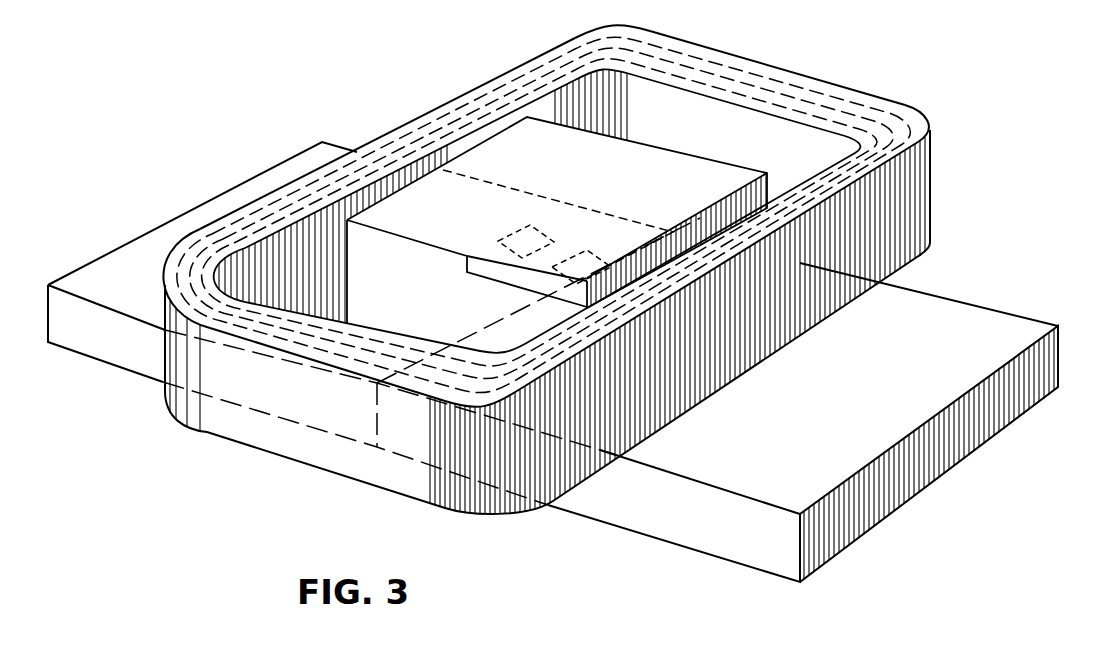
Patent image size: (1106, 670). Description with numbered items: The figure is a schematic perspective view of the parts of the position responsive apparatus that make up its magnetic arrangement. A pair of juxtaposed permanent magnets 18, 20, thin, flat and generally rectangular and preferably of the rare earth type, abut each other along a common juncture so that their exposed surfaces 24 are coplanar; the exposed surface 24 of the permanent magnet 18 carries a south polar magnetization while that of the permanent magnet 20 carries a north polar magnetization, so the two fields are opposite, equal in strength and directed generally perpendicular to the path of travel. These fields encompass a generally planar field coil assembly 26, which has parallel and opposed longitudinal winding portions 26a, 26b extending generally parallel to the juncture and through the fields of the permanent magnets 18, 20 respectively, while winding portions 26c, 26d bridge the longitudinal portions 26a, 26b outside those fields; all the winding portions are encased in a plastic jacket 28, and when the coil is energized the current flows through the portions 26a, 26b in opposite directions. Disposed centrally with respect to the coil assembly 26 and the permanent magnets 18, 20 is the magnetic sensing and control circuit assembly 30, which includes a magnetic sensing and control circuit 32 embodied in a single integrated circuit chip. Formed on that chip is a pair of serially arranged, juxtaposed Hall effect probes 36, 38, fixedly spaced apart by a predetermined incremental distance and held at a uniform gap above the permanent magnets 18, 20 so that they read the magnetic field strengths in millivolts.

The permanent magnet 18 is at (106, 343).
The permanent magnet 20 is at (718, 540).
The exposed surfaces 24 is at (132, 248).
The field coil assembly 26 is at (513, 68).
The longitudinal winding portion 26a is at (421, 116).
The longitudinal winding portion 26b is at (843, 180).
The winding portion 26c is at (745, 58).
The winding portion 26d is at (306, 335).
The plastic jacket 28 is at (885, 94).
The magnetic sensing and control circuit assembly 30 is at (615, 161).
The magnetic sensing and control circuit 32 is at (573, 234).
The Hall effect transducer 36 is at (526, 238).
The Hall effect transducer 38 is at (590, 256).